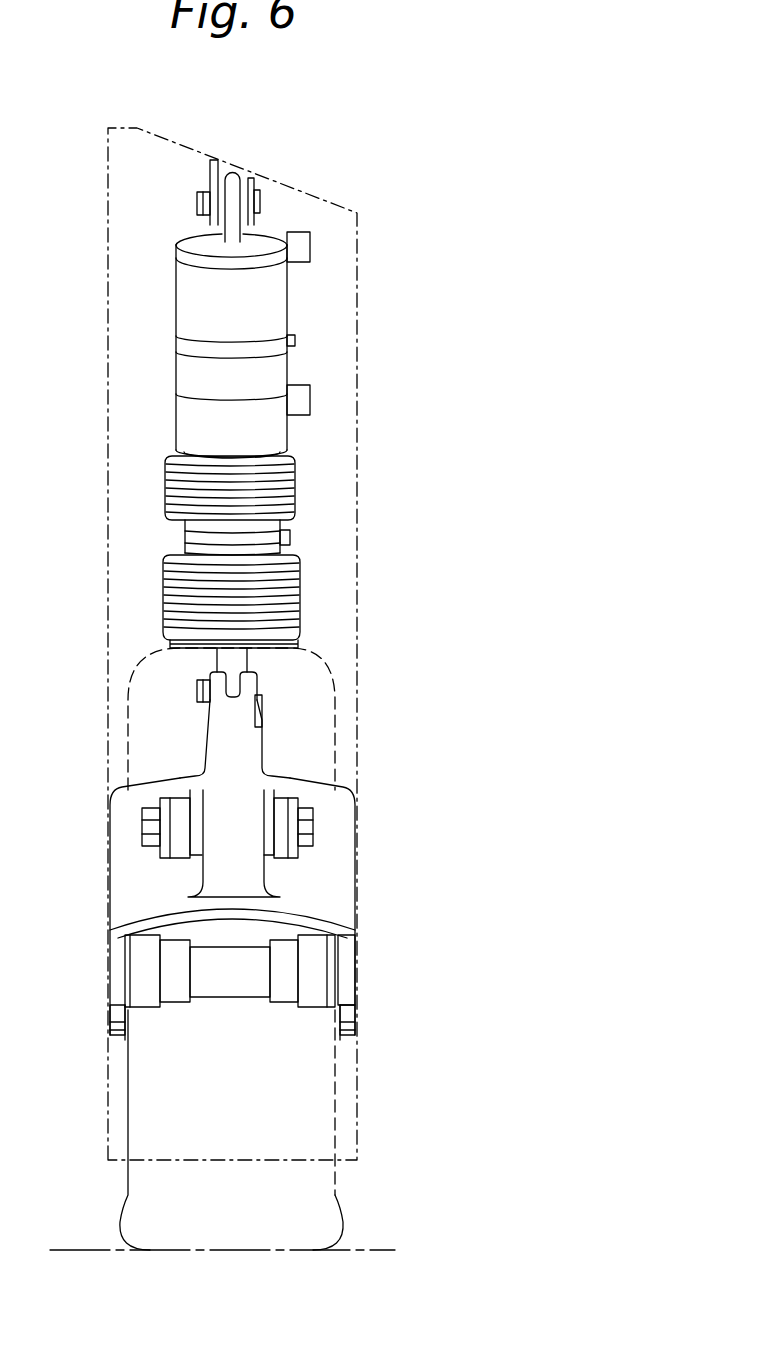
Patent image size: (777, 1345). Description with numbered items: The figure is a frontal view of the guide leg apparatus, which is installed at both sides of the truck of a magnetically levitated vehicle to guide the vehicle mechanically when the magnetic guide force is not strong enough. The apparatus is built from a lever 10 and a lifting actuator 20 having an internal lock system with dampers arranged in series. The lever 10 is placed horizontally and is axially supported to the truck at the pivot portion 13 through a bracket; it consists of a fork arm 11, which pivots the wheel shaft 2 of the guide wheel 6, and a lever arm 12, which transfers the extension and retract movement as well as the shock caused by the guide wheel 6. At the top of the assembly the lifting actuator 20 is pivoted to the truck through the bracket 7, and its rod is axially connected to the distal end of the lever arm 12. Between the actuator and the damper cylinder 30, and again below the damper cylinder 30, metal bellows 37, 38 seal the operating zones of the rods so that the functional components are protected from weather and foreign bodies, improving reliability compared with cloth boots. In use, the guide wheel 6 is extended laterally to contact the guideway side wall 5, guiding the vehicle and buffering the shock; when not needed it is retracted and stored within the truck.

The wheel shaft 2 is at (282, 972).
The guideway side wall 5 is at (373, 1250).
The guide wheel 6 is at (338, 696).
The bracket 7 is at (214, 183).
The lever 10 is at (150, 779).
The fork arm 11 is at (335, 912).
The lever arm 12 is at (242, 743).
The pivot portion 13 is at (313, 822).
The lifting actuator 20 is at (290, 300).
The damper cylinder 30 is at (295, 535).
The metal bellows 37 is at (290, 458).
The metal bellows 38 is at (300, 611).